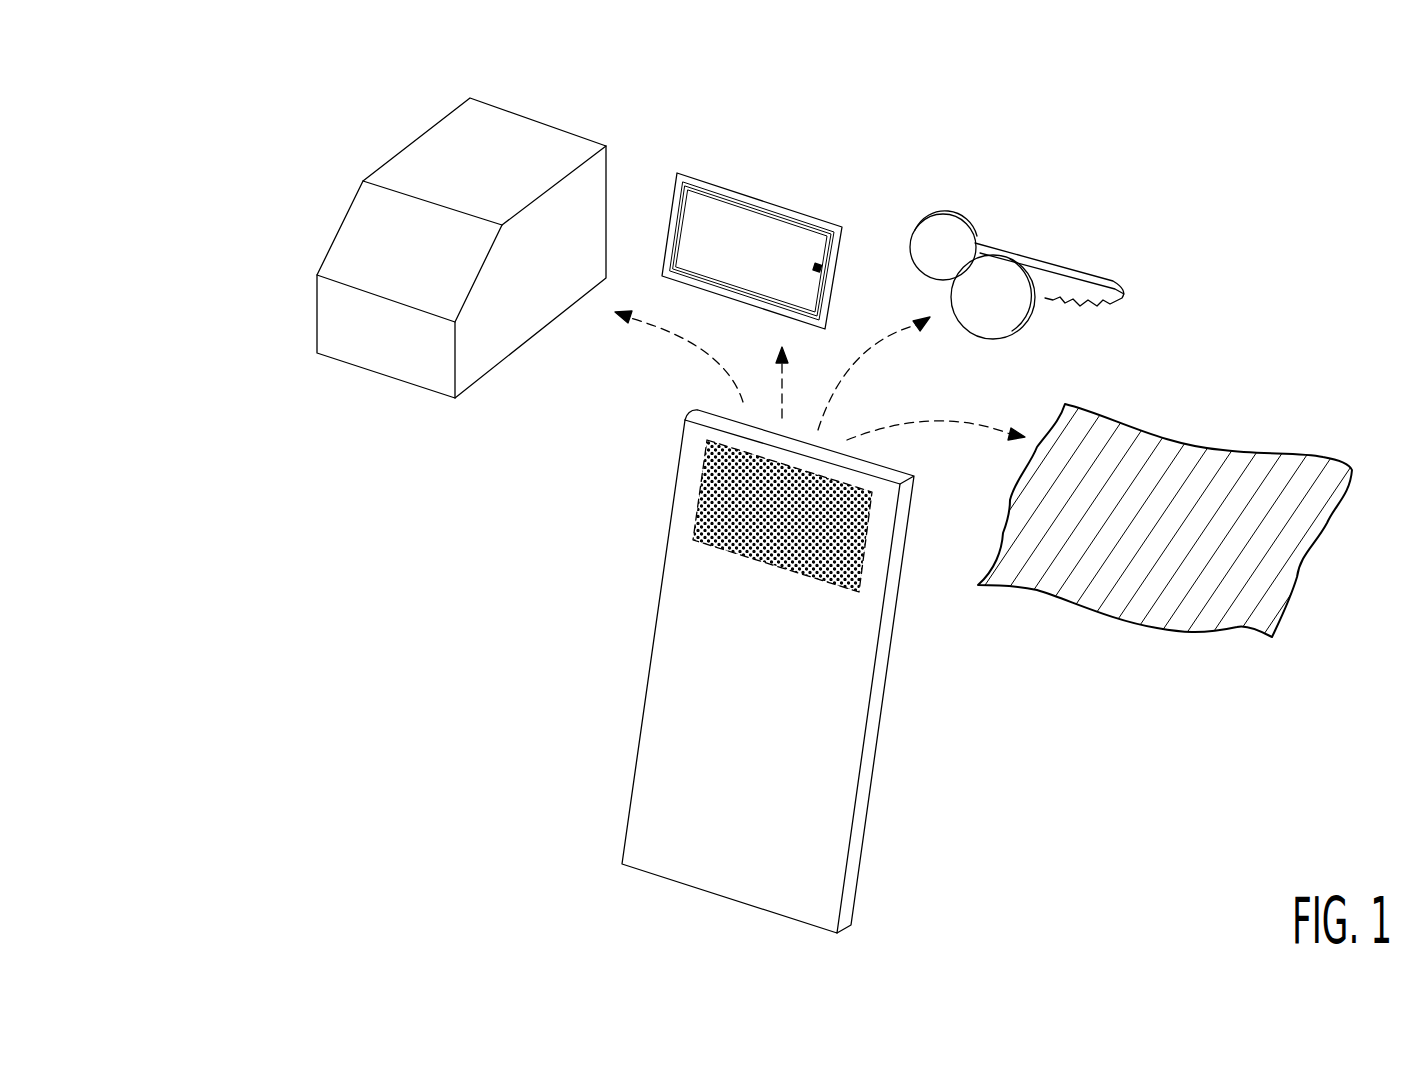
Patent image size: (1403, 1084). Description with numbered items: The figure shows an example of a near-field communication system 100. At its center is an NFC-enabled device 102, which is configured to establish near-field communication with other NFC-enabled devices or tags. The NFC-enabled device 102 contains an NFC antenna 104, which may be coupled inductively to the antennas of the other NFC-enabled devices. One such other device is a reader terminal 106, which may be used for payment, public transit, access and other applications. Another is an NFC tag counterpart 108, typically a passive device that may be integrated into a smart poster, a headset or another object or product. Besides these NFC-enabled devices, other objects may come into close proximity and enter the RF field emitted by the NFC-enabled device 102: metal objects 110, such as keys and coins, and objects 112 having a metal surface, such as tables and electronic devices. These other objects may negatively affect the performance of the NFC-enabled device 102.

The near-field communication system 100 is at (312, 672).
The NFC-enabled device 102 is at (684, 671).
The NFC antenna 104 is at (687, 510).
The reader terminal 106 is at (377, 170).
The NFC tag counterpart 108 is at (783, 205).
The metal object 110 is at (1083, 268).
The object having a metal surface 112 is at (1211, 610).